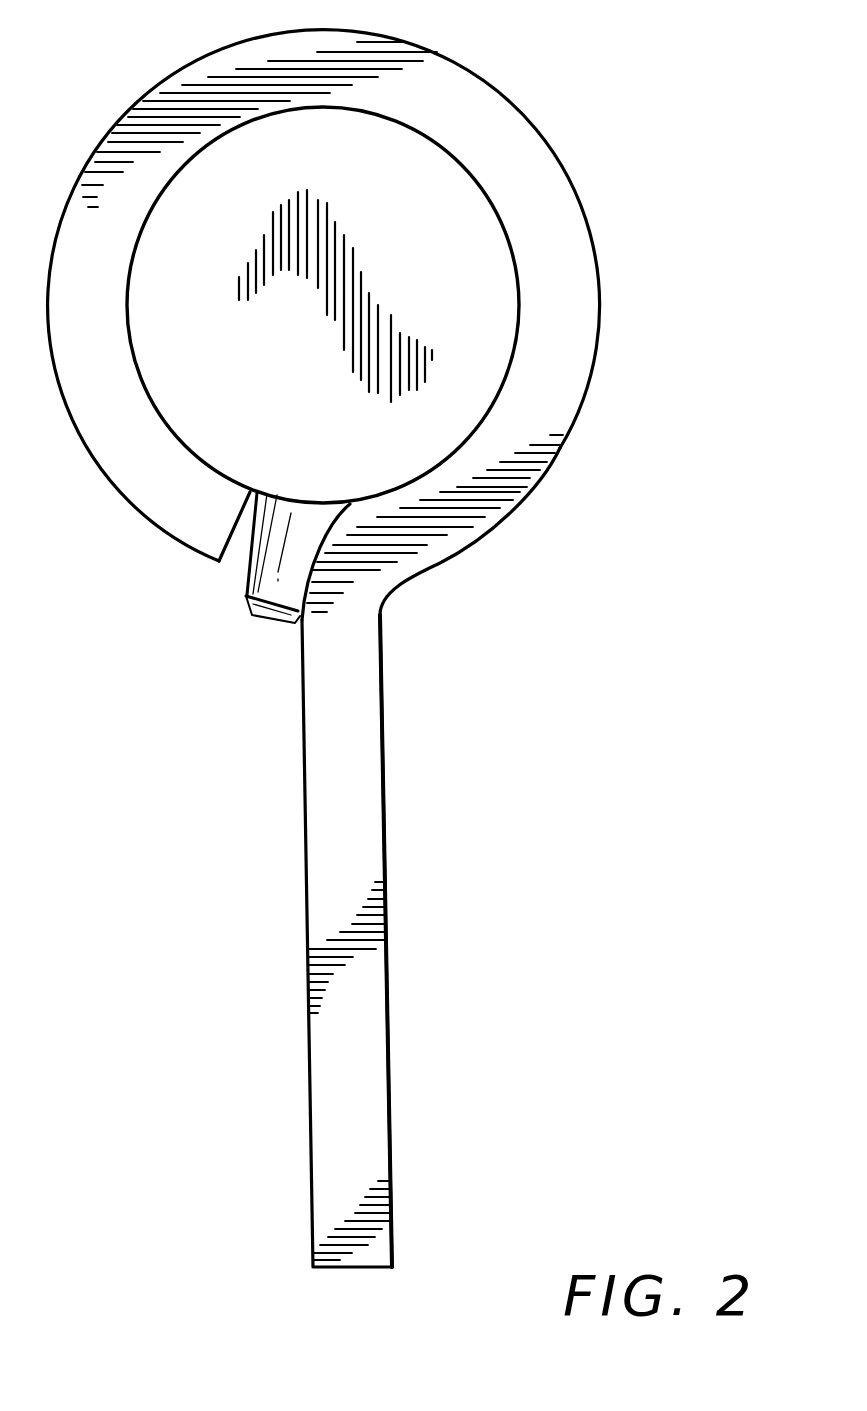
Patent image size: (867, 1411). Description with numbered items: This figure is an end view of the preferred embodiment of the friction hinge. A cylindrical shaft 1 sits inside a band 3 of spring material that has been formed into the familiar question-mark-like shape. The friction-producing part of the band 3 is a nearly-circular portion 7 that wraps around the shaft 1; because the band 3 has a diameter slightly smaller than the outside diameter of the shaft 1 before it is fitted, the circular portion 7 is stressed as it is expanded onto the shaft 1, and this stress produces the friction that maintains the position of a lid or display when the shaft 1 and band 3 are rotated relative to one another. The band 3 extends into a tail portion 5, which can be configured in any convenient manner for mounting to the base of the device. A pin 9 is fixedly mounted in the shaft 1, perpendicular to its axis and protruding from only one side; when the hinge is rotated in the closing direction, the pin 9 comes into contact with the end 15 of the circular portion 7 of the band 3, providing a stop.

The cylindrical shaft 1 is at (437, 197).
The band 3 is at (383, 604).
The tail portion 5 is at (355, 763).
The circular portion 7 is at (210, 88).
The pin 9 is at (272, 625).
The end of circular portion 15 is at (228, 552).